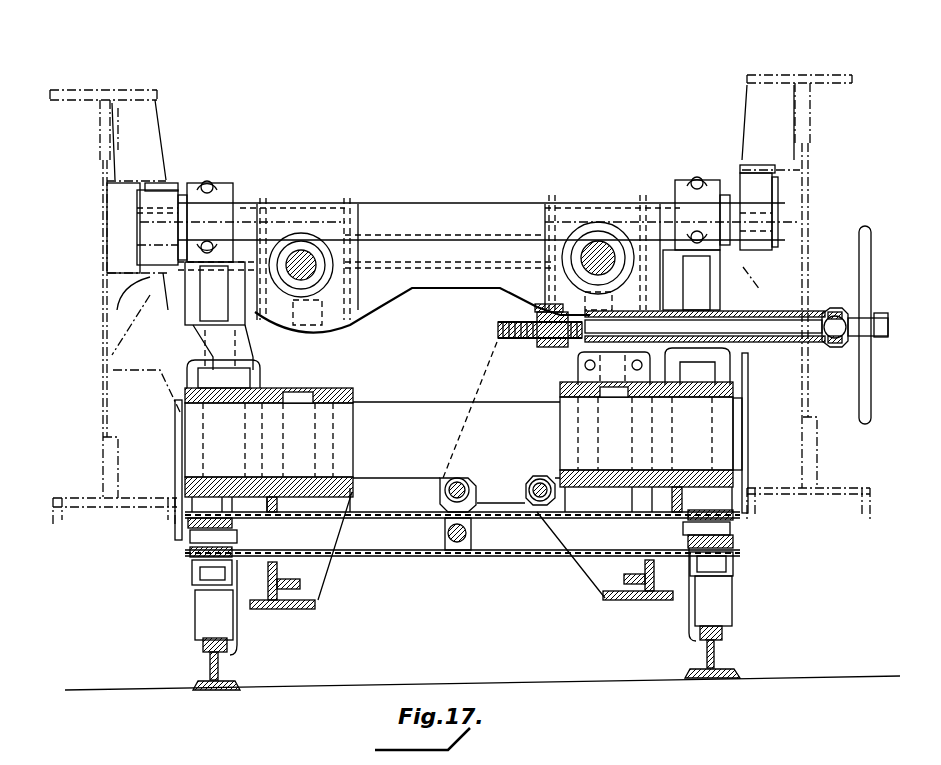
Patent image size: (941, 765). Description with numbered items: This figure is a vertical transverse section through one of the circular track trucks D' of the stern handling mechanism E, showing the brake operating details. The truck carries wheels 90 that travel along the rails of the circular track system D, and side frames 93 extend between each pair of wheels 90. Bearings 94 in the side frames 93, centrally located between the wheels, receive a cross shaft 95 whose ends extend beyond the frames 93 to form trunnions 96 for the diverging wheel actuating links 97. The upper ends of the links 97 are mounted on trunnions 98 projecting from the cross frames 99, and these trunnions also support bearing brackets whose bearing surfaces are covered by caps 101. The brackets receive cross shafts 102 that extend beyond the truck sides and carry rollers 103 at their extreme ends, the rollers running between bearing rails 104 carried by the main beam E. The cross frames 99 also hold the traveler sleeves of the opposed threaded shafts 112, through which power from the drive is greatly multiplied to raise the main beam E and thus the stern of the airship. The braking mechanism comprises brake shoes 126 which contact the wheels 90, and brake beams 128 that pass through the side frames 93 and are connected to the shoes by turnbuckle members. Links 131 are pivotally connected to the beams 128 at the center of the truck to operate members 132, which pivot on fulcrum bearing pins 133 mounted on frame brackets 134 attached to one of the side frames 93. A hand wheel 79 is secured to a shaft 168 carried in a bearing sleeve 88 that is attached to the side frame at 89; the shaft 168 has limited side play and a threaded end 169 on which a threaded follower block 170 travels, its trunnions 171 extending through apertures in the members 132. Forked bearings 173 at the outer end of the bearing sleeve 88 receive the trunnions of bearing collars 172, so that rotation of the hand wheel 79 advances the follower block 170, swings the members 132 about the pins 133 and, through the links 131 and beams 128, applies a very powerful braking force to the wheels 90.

The hand wheel 79 is at (870, 258).
The bearing sleeve 88 is at (753, 312).
The attachment point of bearing sleeve 89 is at (628, 372).
The wheel 90 is at (205, 617).
The side frame 93 is at (318, 605).
The bearing 94 is at (335, 388).
The cross shaft 95 is at (456, 434).
The trunnion 96 is at (200, 438).
The wheel actuating link 97 is at (248, 386).
The trunnion 98 is at (193, 318).
The cross frame 99 is at (478, 282).
The cap 101 is at (233, 197).
The cross shaft 102 is at (452, 210).
The roller 103 is at (155, 197).
The bearing rail 104 is at (167, 183).
The threaded shaft 112 is at (303, 262).
The brake shoe 126 is at (192, 580).
The brake beam 128 is at (510, 556).
The link 131 is at (468, 485).
The brake operating member 132 is at (497, 342).
The fulcrum bearing pin 133 is at (545, 502).
The frame bracket 134 is at (602, 563).
The shaft 168 is at (760, 325).
The threaded end 169 is at (497, 330).
The threaded follower block 170 is at (534, 341).
The trunnion 171 is at (518, 318).
The bearing collar 172 is at (850, 340).
The forked bearing 173 is at (838, 312).
The circular track system D is at (467, 665).
The circular track truck D' is at (424, 354).
The stern handling mechanism E is at (132, 88).